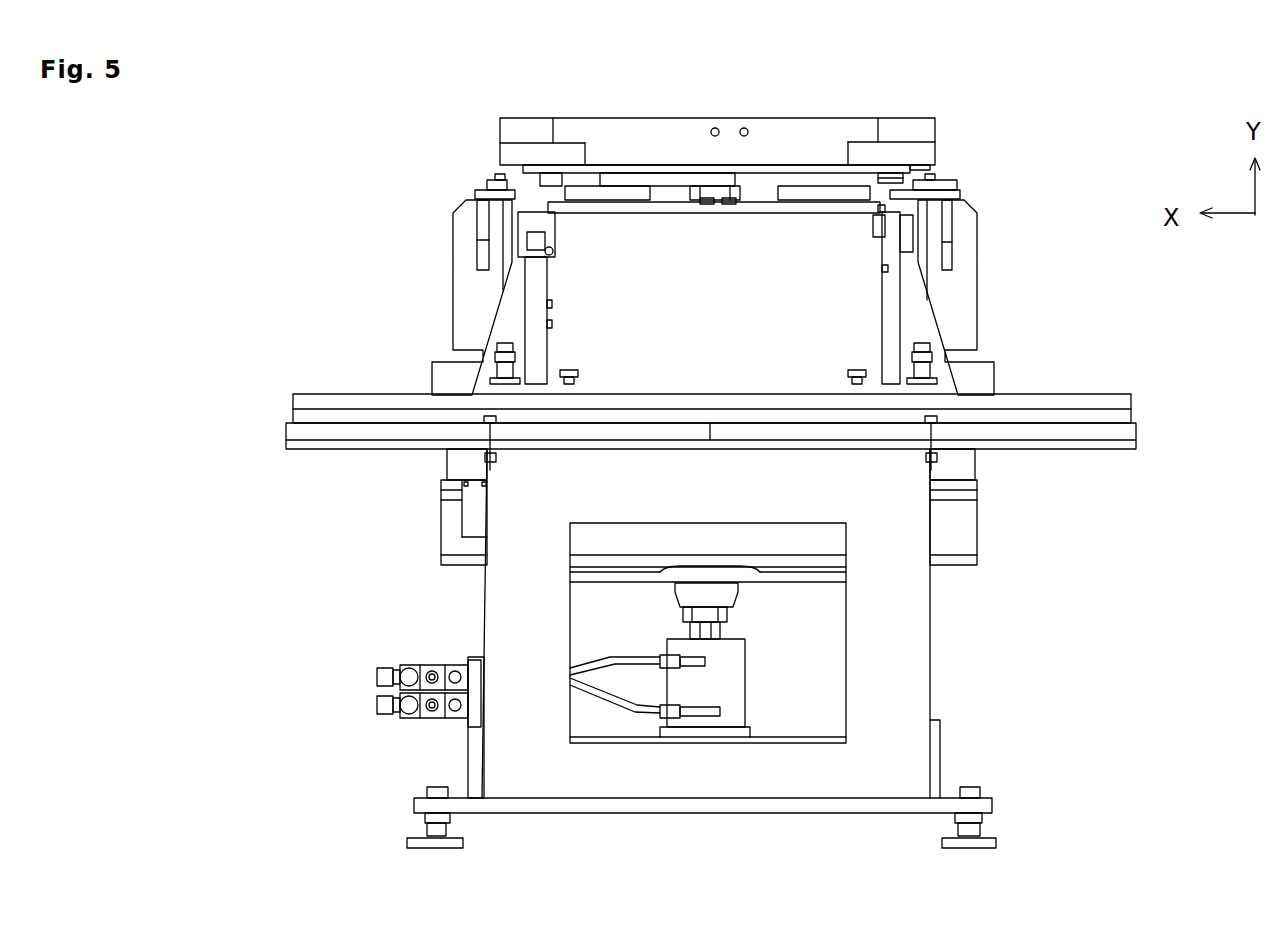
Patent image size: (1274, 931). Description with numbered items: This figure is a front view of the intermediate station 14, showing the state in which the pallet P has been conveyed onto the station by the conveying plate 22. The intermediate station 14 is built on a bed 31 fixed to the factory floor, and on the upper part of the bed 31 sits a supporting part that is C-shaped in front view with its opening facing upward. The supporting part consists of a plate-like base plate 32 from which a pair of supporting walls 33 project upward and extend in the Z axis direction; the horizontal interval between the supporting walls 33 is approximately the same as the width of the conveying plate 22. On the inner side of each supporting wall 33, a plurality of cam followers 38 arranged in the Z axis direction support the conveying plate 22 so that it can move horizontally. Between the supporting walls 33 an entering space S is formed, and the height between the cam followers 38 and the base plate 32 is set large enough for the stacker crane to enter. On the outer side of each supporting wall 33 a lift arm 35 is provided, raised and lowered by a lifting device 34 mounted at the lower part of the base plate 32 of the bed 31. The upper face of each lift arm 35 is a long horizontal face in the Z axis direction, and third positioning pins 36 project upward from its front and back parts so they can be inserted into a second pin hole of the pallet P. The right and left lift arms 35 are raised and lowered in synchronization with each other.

The intermediate station 14 is at (966, 98).
The pallet P is at (815, 130).
The conveying plate 22 is at (758, 213).
The bed 31 is at (945, 800).
The base plate 32 is at (1090, 405).
The supporting wall 33 is at (540, 290).
The lifting device 34 is at (735, 683).
The lift arm 35 is at (460, 292).
The third positioning pin 36 is at (495, 181).
The cam follower 38 is at (875, 225).
The entering space S is at (731, 343).